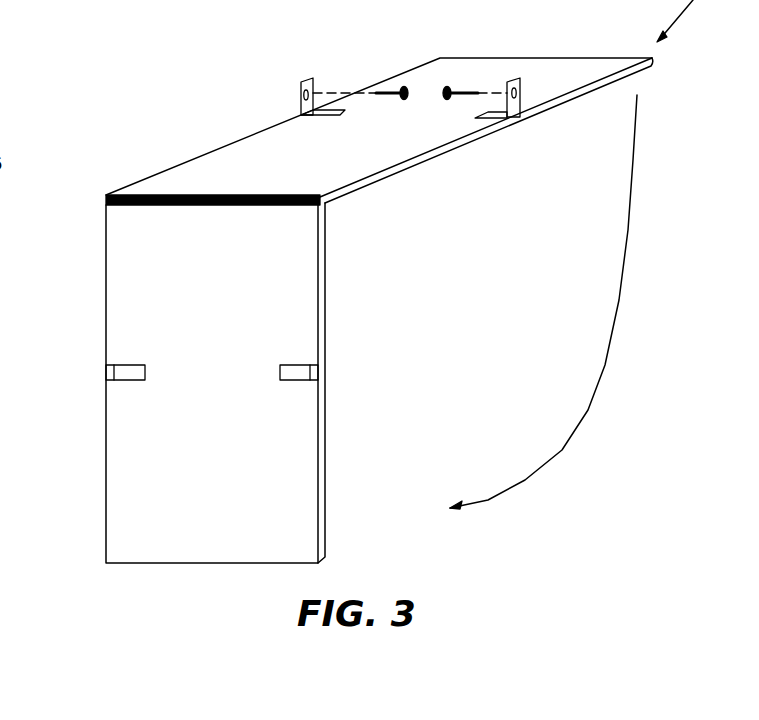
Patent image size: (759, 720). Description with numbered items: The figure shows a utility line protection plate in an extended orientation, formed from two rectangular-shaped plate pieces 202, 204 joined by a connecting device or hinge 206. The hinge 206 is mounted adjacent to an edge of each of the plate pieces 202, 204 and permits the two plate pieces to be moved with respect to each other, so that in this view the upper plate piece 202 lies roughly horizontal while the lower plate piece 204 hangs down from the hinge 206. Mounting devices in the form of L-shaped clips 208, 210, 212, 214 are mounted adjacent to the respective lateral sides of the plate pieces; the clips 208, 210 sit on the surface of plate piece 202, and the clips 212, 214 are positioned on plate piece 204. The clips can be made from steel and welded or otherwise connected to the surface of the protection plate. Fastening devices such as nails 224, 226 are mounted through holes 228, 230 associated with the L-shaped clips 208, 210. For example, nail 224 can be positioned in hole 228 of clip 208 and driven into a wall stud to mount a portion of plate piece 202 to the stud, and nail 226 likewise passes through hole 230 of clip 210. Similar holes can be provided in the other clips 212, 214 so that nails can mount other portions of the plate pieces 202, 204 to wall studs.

The plate piece 202 is at (285, 152).
The plate piece 204 is at (232, 342).
The hinge 206 is at (260, 205).
The L-shaped clip 208 is at (275, 66).
The L-shaped clip 210 is at (522, 113).
The L-shaped clip 212 is at (125, 380).
The L-shaped clip 214 is at (300, 380).
The nail 224 is at (400, 90).
The nail 226 is at (450, 92).
The hole 228 is at (300, 100).
The hole 230 is at (519, 96).